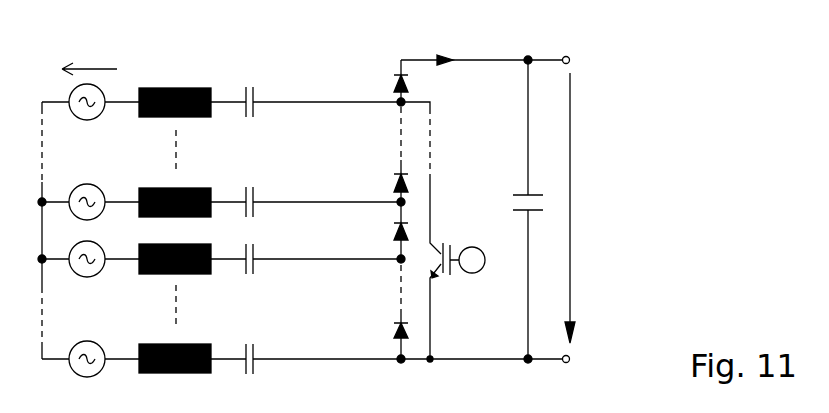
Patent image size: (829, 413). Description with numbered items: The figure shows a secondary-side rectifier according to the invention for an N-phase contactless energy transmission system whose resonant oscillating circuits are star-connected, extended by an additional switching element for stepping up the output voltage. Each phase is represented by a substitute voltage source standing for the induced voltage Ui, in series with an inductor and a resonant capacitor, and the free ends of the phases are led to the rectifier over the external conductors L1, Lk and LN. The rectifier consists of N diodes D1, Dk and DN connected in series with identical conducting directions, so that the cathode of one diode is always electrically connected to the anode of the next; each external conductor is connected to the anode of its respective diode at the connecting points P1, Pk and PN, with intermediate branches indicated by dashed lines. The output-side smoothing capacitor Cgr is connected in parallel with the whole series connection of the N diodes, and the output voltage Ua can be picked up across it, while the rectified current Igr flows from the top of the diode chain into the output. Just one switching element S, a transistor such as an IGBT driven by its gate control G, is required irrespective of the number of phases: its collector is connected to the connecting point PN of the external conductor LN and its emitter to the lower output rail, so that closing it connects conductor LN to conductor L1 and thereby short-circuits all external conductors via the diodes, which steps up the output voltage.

The external conductor LN is at (229, 94).
The external conductor Lk is at (228, 248).
The external conductor L1 is at (228, 348).
The diode DN is at (383, 85).
The diode Dk is at (383, 235).
The diode D1 is at (387, 333).
The connecting point PN is at (398, 104).
The connecting point Pk is at (399, 262).
The connecting point P1 is at (402, 363).
The output-side smoothing capacitor Cgr is at (515, 209).
The gate drive G is at (472, 260).
The switching element S is at (450, 275).
The induced voltage Ui is at (89, 52).
The output voltage Ua is at (585, 208).
The rectifier output current Igr is at (483, 48).